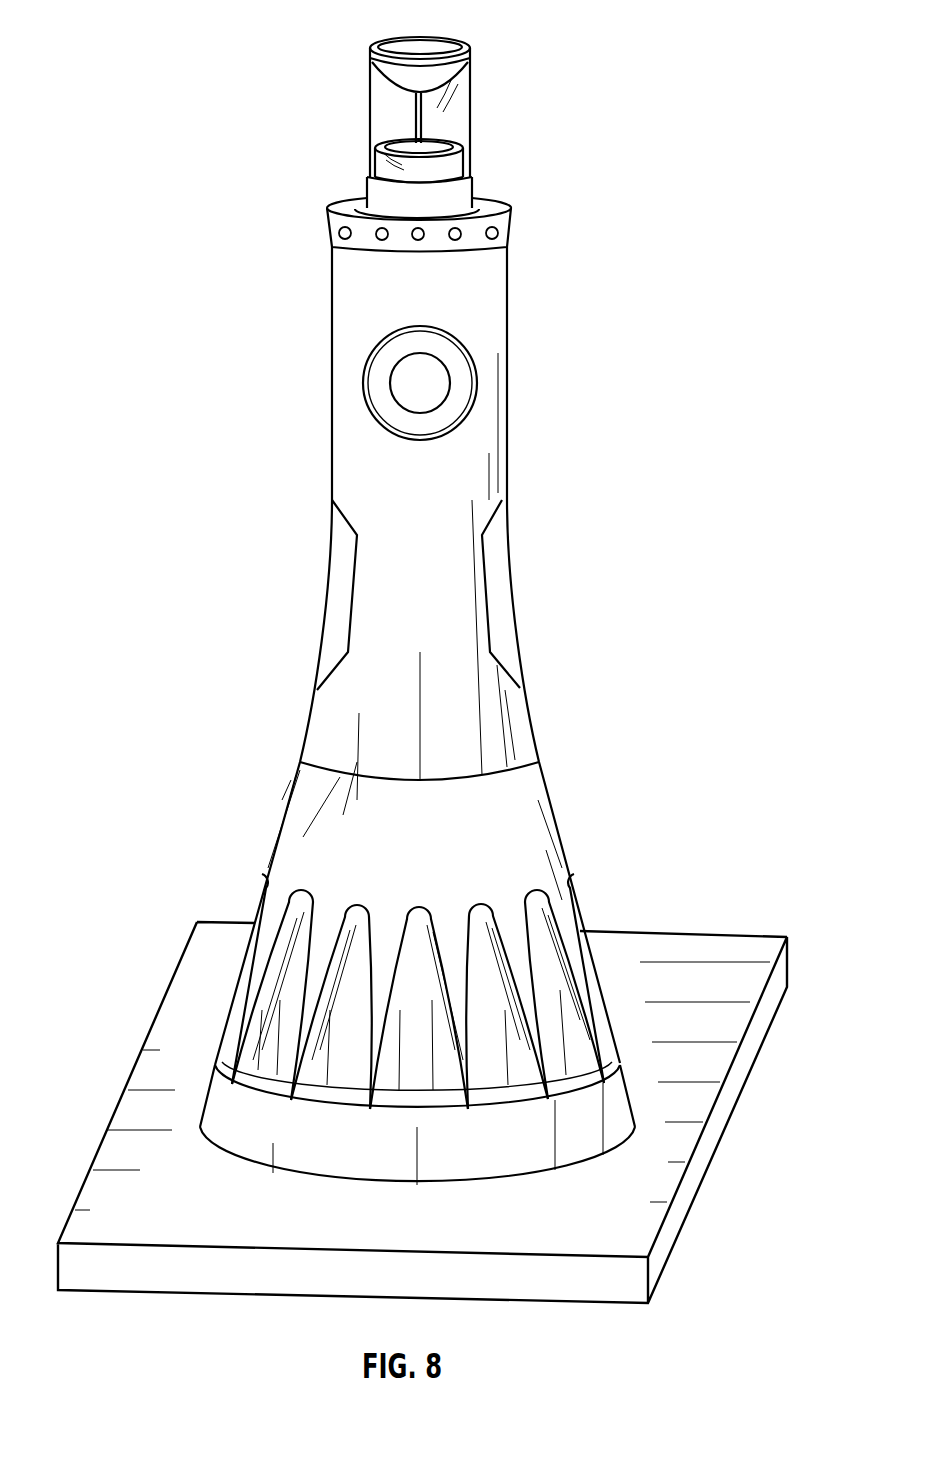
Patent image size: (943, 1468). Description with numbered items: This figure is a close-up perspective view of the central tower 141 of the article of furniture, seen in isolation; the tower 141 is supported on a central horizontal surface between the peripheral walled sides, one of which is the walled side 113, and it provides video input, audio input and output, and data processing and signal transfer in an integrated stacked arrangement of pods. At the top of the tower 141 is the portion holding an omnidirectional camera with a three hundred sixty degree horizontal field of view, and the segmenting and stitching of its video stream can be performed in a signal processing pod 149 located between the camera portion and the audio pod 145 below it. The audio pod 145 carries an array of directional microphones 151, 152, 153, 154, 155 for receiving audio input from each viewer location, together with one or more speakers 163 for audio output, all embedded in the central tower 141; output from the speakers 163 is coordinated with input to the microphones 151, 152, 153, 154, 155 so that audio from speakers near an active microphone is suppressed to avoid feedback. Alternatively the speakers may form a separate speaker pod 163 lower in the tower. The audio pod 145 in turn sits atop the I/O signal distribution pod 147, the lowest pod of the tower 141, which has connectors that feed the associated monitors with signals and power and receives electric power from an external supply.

The central tower 141 is at (596, 381).
The peripheral walled side 113 is at (463, 54).
The signal processing pod 149 is at (458, 125).
The audio pod 145 is at (437, 250).
The directional microphone 151 is at (492, 241).
The directional microphone 152 is at (455, 242).
The directional microphone 153 is at (418, 242).
The directional microphone 154 is at (381, 242).
The directional microphone 155 is at (343, 241).
The speaker 163 is at (485, 498).
The I/O signal distribution pod 147 is at (527, 806).